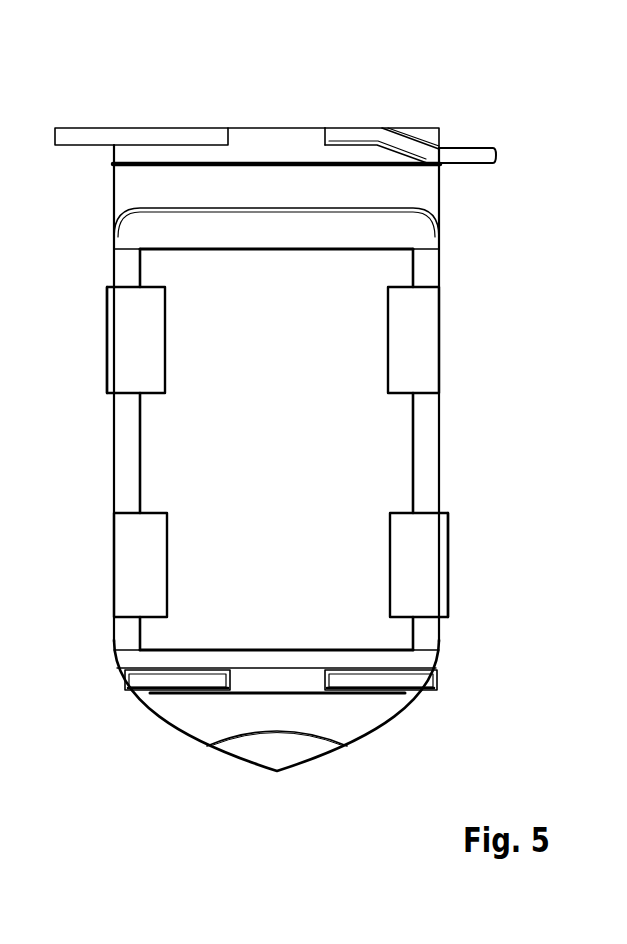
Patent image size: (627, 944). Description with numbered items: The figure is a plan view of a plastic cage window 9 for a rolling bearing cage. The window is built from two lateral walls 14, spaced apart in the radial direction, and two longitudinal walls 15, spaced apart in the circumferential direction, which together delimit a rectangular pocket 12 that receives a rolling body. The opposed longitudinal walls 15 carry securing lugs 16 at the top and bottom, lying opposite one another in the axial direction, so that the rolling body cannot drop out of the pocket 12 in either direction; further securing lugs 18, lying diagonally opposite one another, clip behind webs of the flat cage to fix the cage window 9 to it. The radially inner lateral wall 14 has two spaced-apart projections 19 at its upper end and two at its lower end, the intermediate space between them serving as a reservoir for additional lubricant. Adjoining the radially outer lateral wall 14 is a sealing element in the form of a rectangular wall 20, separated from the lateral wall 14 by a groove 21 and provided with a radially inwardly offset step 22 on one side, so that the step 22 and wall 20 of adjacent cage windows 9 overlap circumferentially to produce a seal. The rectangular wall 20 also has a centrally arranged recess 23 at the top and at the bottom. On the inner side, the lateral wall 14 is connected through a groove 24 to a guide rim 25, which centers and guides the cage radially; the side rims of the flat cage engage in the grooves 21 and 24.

The cage window 9 is at (538, 165).
The pocket 12 is at (300, 452).
The lateral wall 14 is at (398, 232).
The longitudinal wall 15 is at (125, 453).
The securing lug 16 is at (125, 318).
The securing lug 18 is at (107, 365).
The projection 19 is at (172, 678).
The rectangular wall 20 is at (86, 137).
The groove 21 is at (425, 188).
The step 22 is at (468, 155).
The recess 23 is at (268, 135).
The groove 24 is at (350, 717).
The guide rim 25 is at (278, 757).